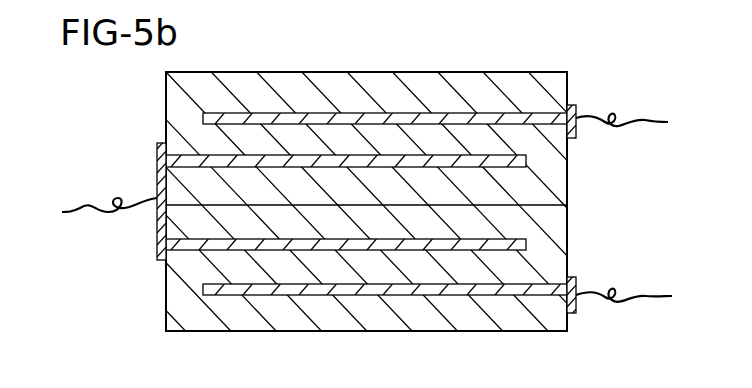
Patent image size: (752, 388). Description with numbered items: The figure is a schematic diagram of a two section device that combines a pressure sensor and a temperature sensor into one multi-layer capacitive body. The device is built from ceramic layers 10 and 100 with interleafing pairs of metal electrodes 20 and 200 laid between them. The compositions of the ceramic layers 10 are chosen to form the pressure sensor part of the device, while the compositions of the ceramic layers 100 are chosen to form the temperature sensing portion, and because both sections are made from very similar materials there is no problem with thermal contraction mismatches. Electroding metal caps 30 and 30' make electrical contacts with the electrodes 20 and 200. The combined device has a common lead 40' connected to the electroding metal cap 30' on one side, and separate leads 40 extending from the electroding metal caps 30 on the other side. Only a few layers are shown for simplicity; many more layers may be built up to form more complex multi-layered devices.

The ceramic layers 10 is at (166, 103).
The metal electrodes 20 is at (300, 118).
The metal electrodes 200 is at (252, 287).
The ceramic layers 100 is at (165, 270).
The electroding metal caps 30 is at (606, 179).
The electroding metal cap 30' is at (115, 199).
The leads 40 is at (630, 204).
The common lead 40' is at (91, 226).